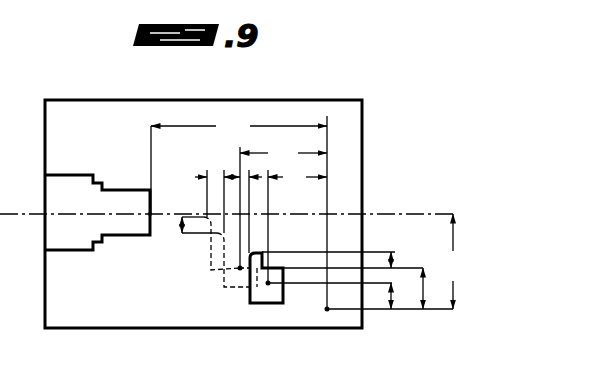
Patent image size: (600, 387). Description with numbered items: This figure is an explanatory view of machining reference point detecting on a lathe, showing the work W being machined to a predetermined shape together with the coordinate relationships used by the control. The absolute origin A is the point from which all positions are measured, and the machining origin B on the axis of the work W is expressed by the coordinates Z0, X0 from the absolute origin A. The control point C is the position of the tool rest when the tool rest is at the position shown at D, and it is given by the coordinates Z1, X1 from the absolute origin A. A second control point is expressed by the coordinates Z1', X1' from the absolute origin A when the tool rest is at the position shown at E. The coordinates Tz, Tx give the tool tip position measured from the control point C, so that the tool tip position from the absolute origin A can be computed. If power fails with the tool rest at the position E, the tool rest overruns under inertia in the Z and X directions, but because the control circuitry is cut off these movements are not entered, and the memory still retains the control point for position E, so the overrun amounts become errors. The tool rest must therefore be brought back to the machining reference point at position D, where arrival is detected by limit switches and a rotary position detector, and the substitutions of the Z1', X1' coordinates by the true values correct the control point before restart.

The work W is at (125, 190).
The machining origin B is at (157, 202).
The control point C is at (268, 285).
The tool rest position D is at (250, 299).
The tool rest position E is at (221, 288).
The absolute origin A is at (380, 315).
The Z coordinate of machining origin Z0 is at (239, 212).
The Z coordinate of control point Z1 is at (297, 224).
The Z coordinate of control point Z1' is at (283, 204).
The Z coordinate of tool tip from control point Tz is at (248, 206).
The X coordinate of machining origin X0 is at (453, 261).
The X coordinate of control point X1 is at (377, 296).
The X coordinate of control point X1' is at (415, 288).
The X coordinate of tool tip from control point Tx is at (384, 263).